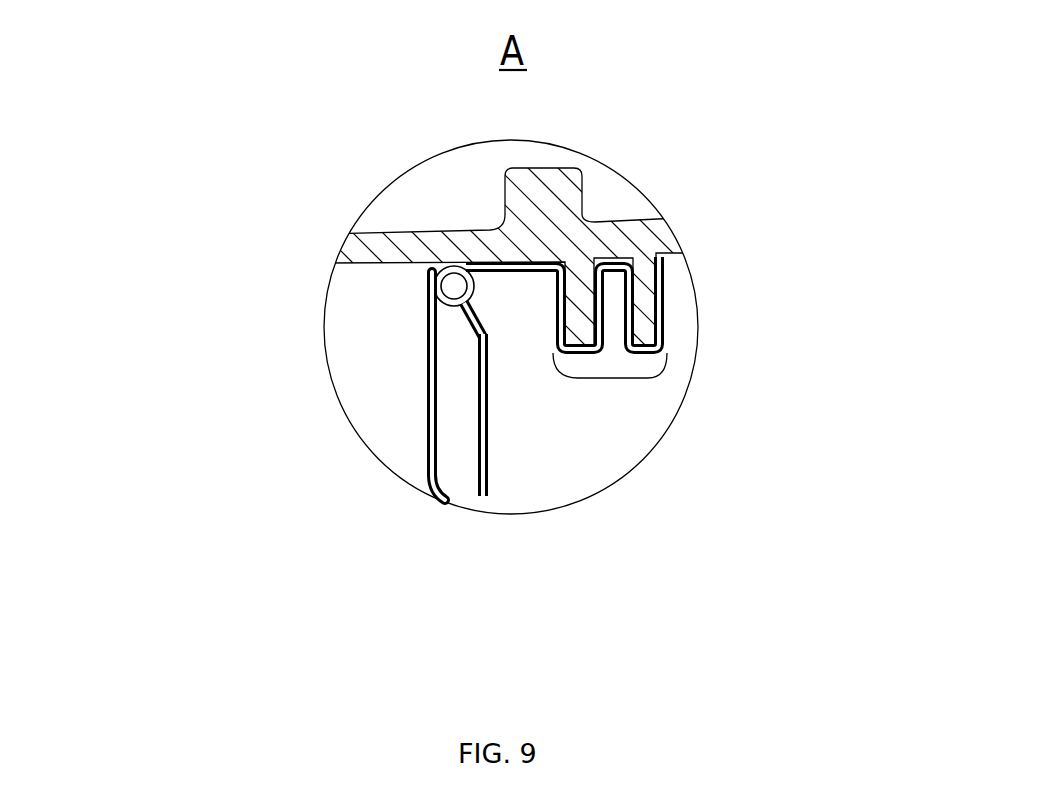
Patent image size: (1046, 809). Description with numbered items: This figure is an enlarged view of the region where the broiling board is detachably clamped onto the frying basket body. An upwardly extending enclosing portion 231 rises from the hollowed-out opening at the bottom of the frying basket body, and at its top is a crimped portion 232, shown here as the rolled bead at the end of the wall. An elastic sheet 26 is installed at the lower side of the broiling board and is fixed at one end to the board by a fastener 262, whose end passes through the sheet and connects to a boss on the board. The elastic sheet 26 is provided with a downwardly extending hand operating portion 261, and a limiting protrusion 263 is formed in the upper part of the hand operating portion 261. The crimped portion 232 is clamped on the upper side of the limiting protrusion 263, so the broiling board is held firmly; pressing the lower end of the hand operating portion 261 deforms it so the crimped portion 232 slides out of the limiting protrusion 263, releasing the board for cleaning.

The elastic sheet 26 is at (558, 252).
The hand operating portion 261 is at (488, 417).
The fastener 262 is at (612, 363).
The limiting protrusion 263 is at (472, 335).
The enclosing portion 231 is at (428, 377).
The crimped portion 232 is at (454, 286).